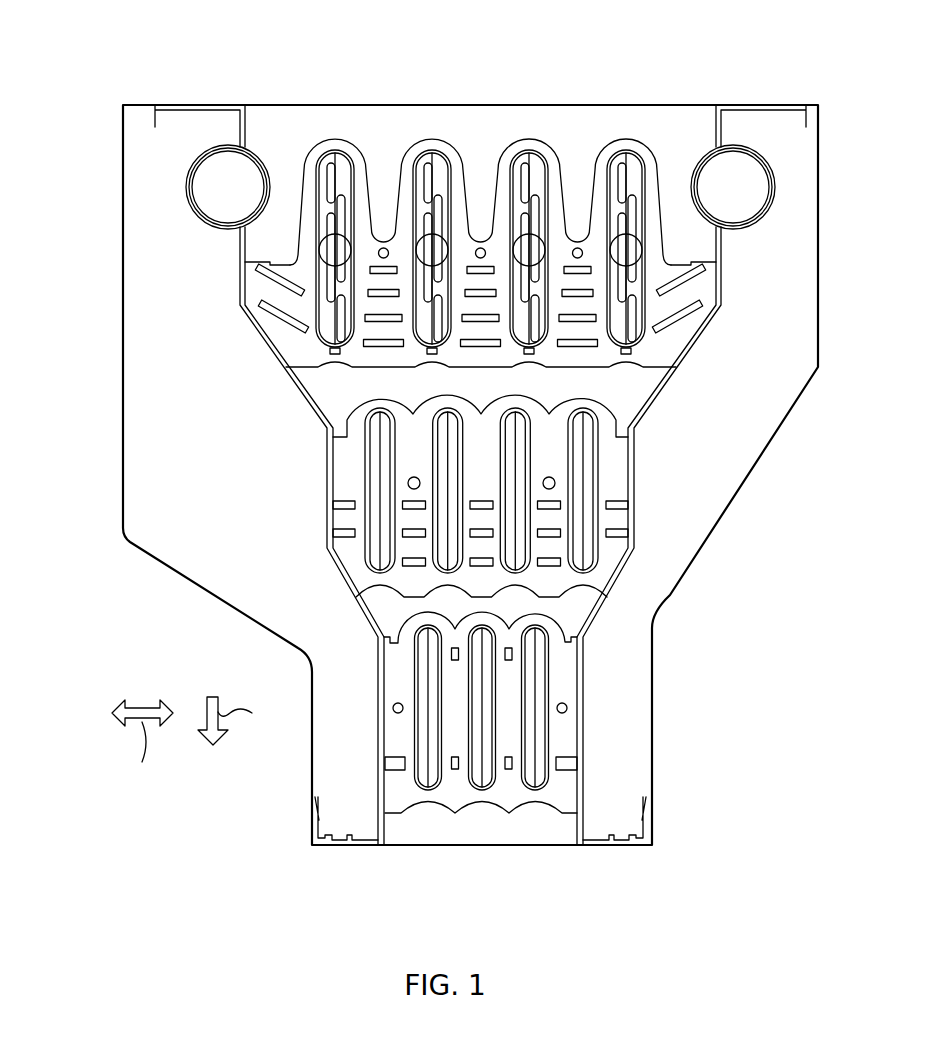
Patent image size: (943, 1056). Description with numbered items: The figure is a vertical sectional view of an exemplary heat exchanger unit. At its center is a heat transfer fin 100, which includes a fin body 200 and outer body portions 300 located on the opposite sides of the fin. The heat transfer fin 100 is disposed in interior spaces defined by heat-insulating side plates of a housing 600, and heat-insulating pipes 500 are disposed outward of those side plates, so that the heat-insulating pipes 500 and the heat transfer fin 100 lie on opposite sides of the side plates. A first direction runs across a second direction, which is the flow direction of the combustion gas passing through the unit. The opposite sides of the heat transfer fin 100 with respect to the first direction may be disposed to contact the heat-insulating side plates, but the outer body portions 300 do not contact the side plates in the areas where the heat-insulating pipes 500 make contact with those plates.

The heat transfer fin 100 is at (270, 52).
The fin body 200 is at (383, 238).
The outer body portions 300 is at (257, 257).
The heat-insulating pipes 500 is at (187, 198).
The housing 600 is at (300, 398).